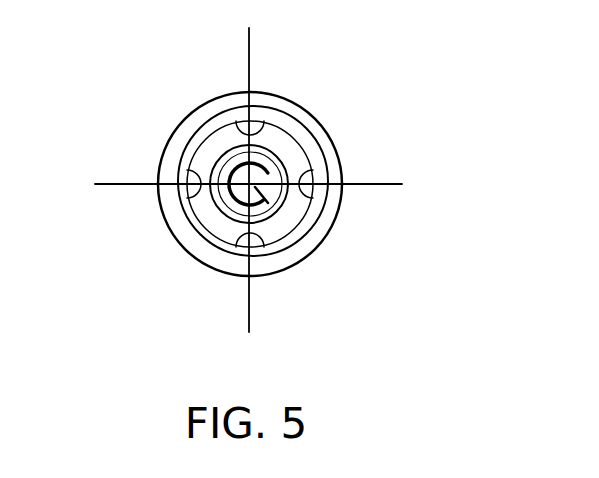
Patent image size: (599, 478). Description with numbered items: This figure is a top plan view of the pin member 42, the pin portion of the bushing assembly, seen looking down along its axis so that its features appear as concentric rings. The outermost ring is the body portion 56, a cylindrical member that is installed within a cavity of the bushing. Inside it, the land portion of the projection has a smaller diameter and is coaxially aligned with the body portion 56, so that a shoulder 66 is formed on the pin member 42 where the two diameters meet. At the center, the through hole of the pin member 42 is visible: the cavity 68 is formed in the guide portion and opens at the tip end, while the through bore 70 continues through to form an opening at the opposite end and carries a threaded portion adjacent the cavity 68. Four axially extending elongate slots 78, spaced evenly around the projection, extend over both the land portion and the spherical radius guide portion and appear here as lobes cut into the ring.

The pin member 42 is at (180, 119).
The body portion 56 is at (320, 121).
The shoulder 66 is at (332, 163).
The cavity 68 is at (262, 157).
The through bore 70 is at (285, 212).
The elongate slots 78 is at (250, 121).